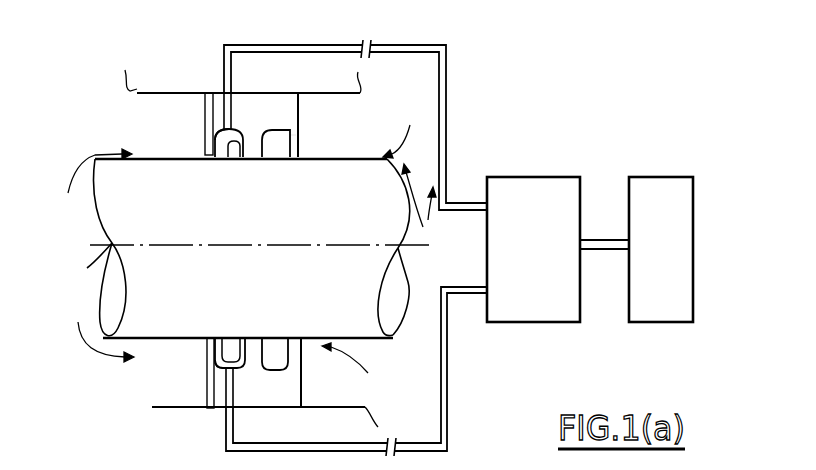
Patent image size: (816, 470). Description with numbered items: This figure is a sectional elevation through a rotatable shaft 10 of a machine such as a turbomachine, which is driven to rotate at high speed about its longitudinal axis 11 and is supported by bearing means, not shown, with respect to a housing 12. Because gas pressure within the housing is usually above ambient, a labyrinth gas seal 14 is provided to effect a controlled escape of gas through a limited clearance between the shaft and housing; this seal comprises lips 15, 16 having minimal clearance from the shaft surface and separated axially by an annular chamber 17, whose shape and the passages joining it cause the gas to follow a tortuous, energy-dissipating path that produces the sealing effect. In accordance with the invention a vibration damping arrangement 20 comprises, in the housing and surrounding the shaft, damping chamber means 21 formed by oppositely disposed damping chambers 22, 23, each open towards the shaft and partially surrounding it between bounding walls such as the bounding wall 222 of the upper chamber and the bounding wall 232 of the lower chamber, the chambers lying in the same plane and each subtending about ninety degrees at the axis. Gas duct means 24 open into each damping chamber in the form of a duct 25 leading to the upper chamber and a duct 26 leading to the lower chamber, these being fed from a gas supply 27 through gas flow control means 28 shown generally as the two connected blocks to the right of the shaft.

The shaft 10 is at (372, 345).
The longitudinal axis 11 is at (82, 270).
The housing 12 is at (137, 93).
The labyrinth gas seal 14 is at (283, 115).
The lip 15 is at (300, 152).
The lip 16 is at (253, 158).
The annular chamber 17 is at (296, 143).
The vibration damping arrangement 20 is at (128, 60).
The damping chamber means 21 is at (88, 255).
The damping chamber 22 is at (228, 158).
The bounding wall 222 is at (216, 134).
The damping chamber 23 is at (230, 343).
The bounding wall 232 is at (220, 365).
The gas duct means 24 is at (224, 72).
The duct 25 is at (227, 110).
The duct 26 is at (233, 392).
The gas supply 27 is at (655, 322).
The gas flow control means 28 is at (533, 342).